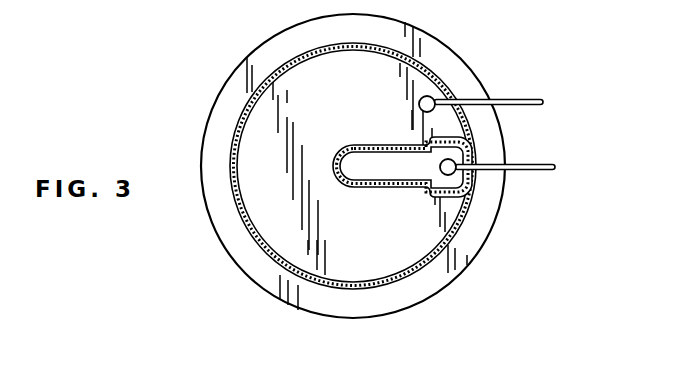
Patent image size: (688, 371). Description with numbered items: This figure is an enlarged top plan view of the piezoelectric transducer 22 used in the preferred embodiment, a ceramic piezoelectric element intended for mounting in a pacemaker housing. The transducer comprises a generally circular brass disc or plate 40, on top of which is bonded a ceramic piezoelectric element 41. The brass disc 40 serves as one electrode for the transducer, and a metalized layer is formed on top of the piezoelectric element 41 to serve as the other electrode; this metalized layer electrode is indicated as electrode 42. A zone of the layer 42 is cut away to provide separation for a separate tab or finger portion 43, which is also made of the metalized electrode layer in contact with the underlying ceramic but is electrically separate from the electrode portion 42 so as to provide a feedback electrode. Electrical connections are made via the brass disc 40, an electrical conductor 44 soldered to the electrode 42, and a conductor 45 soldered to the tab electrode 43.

The button cell 22 is at (199, 113).
The brass disc 40 is at (245, 264).
The ceramic piezoelectric element 41 is at (286, 274).
The metalized layer electrode 42 is at (317, 293).
The tab 43 is at (476, 148).
The electrical conductor 44 is at (530, 96).
The conductor 45 is at (543, 161).